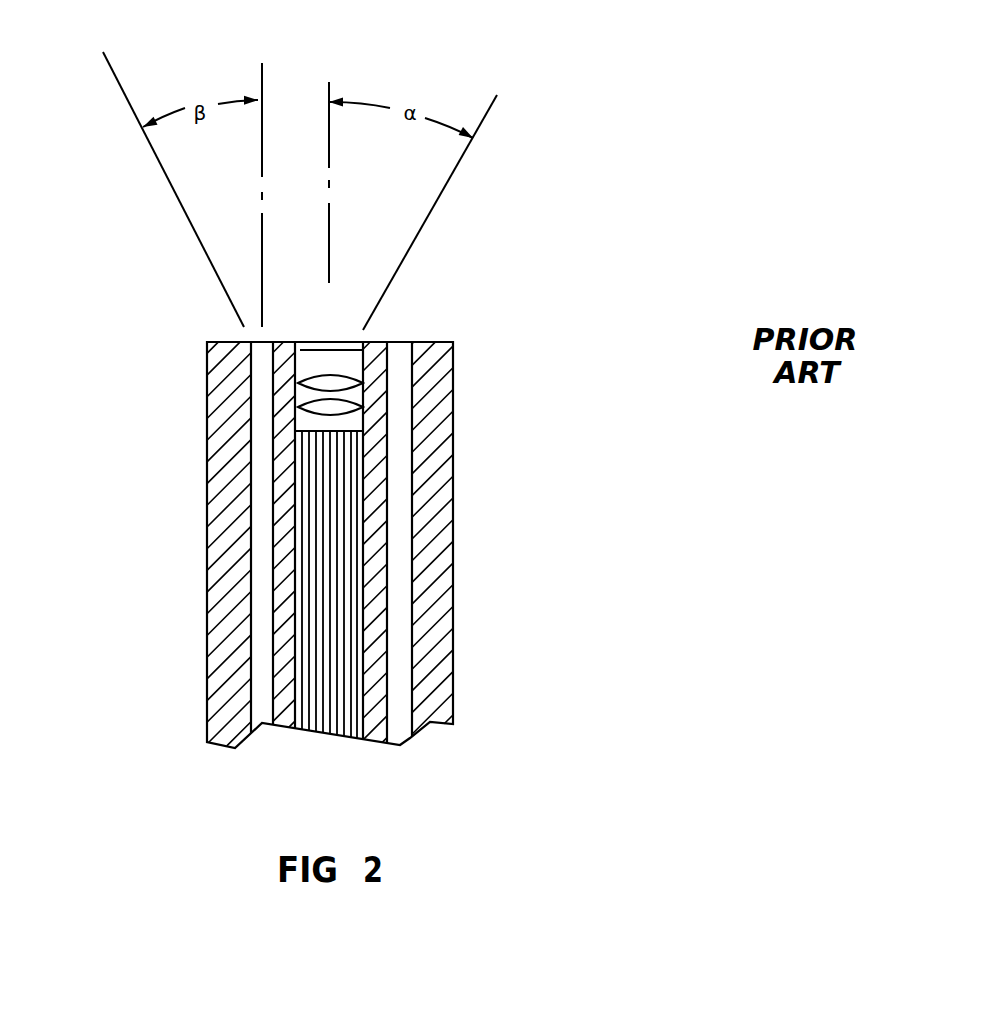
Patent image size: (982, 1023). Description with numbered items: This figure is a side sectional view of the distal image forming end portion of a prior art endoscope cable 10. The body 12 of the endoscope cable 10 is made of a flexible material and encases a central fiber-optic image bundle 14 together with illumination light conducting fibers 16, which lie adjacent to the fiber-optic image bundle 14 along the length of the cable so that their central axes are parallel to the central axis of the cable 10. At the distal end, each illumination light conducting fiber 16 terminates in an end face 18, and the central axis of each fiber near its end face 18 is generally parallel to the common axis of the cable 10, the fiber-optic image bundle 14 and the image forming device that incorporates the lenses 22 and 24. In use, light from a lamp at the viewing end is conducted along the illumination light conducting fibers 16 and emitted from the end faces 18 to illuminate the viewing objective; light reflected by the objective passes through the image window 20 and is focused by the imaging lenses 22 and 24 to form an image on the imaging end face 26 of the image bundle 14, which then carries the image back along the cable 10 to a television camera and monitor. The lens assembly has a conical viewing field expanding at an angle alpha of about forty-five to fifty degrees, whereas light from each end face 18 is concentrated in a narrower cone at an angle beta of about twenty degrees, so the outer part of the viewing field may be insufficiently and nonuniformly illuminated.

The endoscope cable 10 is at (490, 375).
The body 12 is at (430, 598).
The fiber-optic image bundle 14 is at (327, 692).
The illumination light conducting fibers 16 is at (263, 627).
The end face 18 is at (397, 335).
The image window 20 is at (310, 343).
The imaging lens 22 is at (363, 385).
The imaging lens 24 is at (298, 406).
The imaging end face 26 is at (318, 430).